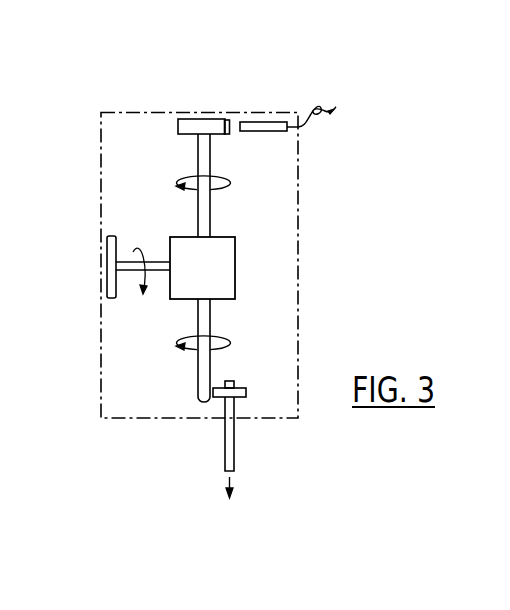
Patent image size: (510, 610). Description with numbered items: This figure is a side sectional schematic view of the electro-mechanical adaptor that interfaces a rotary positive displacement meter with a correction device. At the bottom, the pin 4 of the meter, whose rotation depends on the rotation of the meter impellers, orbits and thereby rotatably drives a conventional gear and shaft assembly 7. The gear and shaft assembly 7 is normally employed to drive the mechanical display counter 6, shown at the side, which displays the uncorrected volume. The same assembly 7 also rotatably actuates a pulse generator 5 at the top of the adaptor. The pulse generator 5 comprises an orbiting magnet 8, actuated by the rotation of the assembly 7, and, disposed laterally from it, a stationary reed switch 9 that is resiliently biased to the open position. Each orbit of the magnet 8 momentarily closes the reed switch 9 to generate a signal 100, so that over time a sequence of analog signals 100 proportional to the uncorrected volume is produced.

The pin 4 is at (237, 447).
The pulse generator 5 is at (197, 111).
The mechanical display counter 6 is at (104, 272).
The gear and shaft assembly 7 is at (237, 262).
The orbiting magnet 8 is at (228, 120).
The stationary reed switch 9 is at (250, 122).
The signal 100 is at (347, 92).